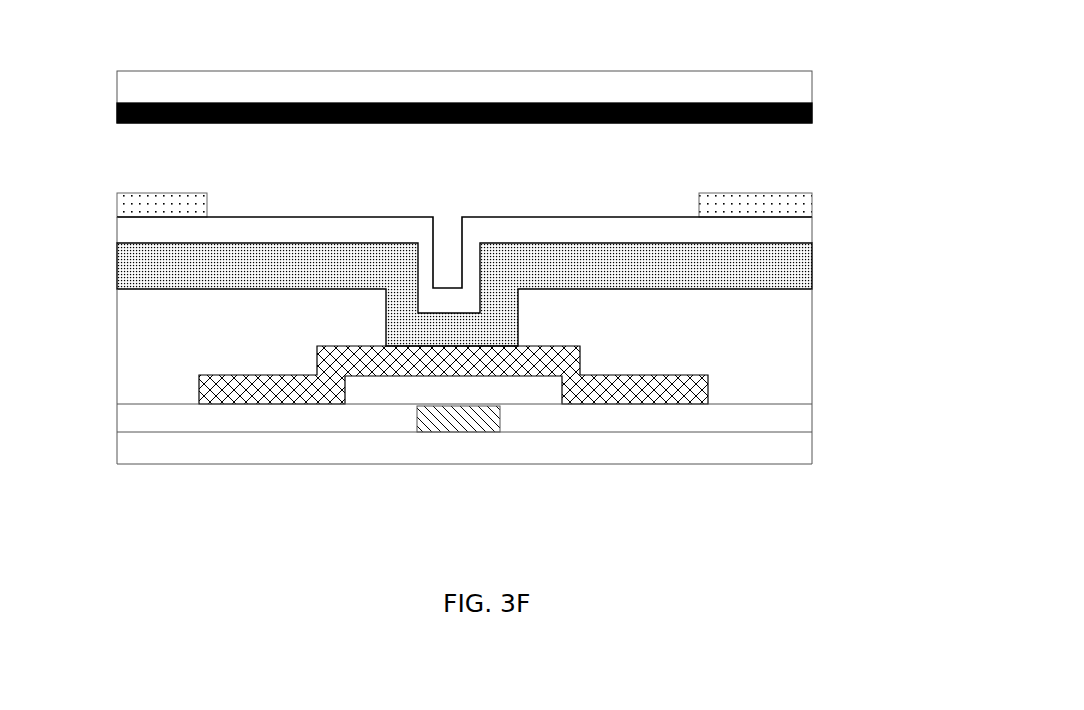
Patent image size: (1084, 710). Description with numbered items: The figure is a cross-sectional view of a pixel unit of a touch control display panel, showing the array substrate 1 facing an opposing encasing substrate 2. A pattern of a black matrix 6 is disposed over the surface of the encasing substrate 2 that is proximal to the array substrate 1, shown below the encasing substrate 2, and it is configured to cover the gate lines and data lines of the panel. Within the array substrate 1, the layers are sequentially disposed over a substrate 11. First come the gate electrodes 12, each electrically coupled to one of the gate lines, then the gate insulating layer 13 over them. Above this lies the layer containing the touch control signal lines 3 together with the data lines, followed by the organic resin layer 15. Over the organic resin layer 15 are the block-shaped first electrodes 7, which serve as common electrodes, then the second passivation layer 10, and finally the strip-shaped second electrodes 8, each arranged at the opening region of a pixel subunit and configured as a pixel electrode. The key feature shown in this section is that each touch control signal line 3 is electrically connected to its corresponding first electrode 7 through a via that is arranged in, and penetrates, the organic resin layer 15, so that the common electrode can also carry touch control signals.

The array substrate 1 is at (500, 324).
The encasing substrate 2 is at (492, 71).
The touch control signal line 3 is at (620, 392).
The black matrix 6 is at (812, 113).
The first electrode 7 is at (812, 262).
The second electrode 8 is at (767, 203).
The second passivation layer 10 is at (758, 232).
The substrate 11 is at (777, 443).
The gate electrode 12 is at (467, 415).
The gate insulating layer 13 is at (777, 419).
The organic resin layer 15 is at (770, 360).